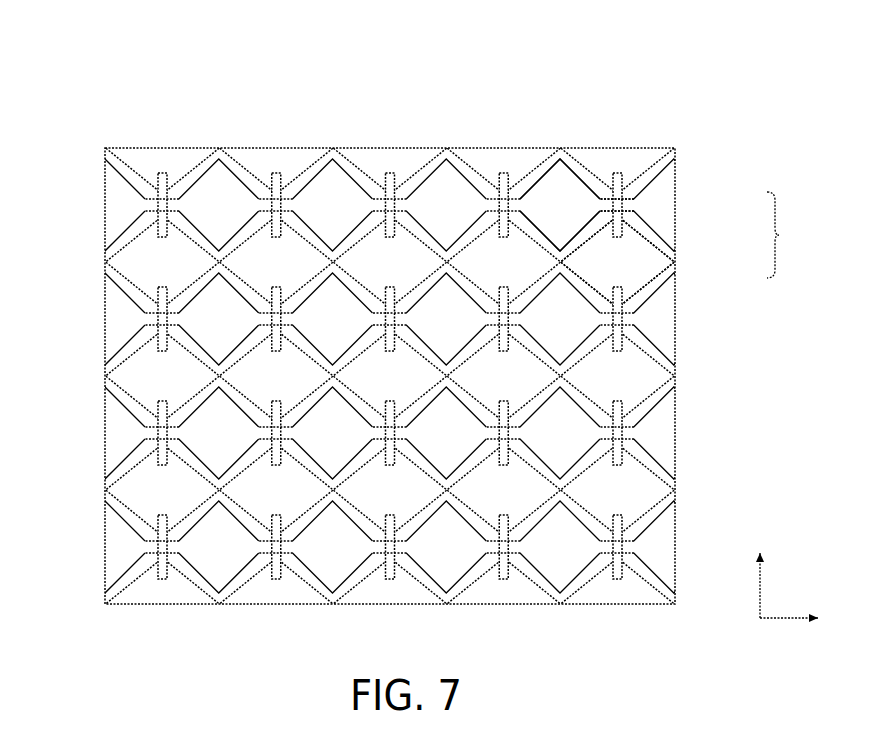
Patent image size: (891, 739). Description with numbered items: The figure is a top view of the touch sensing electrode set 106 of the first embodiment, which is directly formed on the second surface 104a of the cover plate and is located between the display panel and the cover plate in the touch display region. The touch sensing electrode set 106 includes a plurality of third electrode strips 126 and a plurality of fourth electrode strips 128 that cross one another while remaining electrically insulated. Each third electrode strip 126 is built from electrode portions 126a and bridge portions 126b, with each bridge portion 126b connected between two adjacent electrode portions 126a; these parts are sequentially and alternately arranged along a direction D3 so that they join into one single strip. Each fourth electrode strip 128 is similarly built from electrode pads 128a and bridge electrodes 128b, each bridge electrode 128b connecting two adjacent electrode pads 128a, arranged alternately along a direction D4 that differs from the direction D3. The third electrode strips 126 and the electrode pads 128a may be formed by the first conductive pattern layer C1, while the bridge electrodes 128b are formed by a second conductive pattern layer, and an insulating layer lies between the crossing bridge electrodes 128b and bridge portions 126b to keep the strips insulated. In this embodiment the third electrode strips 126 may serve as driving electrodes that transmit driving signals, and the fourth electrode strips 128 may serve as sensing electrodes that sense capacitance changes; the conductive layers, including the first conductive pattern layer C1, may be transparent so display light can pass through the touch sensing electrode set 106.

The touch sensing electrode set 106 is at (464, 342).
The second surface of the cover plate 104a is at (447, 147).
The third electrode strips 126 is at (102, 207).
The electrode portions 126a is at (594, 255).
The bridge portions 126b is at (633, 206).
The fourth electrode strips 128 is at (514, 145).
The electrode pads 128a is at (633, 246).
The bridge electrodes 128b is at (624, 180).
The first conductive pattern layer C1 is at (787, 235).
The direction D3 is at (805, 621).
The direction D4 is at (759, 569).